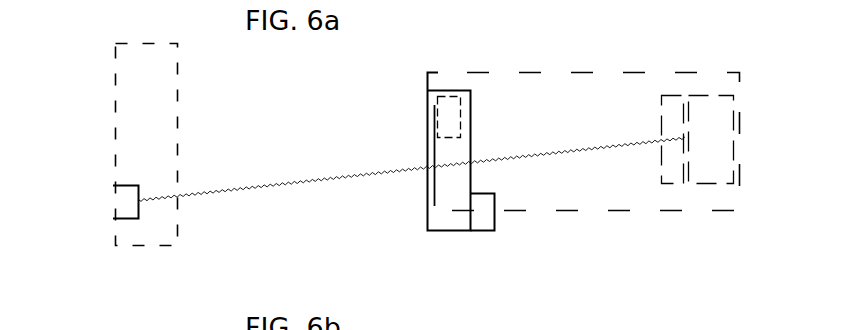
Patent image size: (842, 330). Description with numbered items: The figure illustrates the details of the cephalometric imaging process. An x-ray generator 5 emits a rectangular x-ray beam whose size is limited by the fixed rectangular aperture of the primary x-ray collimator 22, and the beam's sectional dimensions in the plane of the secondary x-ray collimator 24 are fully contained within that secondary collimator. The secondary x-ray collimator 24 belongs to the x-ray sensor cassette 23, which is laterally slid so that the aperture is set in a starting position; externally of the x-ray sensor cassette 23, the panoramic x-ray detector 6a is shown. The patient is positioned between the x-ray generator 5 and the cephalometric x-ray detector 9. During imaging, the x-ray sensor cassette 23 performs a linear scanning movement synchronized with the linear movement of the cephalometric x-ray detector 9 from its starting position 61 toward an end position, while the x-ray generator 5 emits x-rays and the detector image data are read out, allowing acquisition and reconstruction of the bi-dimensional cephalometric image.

The x-ray generator 5 is at (720, 157).
The cephalometric x-ray detector 9 is at (92, 214).
The starting position 61 is at (125, 203).
The primary x-ray collimator 22 is at (672, 174).
The x-ray sensor cassette 23 is at (427, 218).
The secondary x-ray collimator 24 is at (432, 160).
The panoramic x-ray detector 6a is at (488, 220).